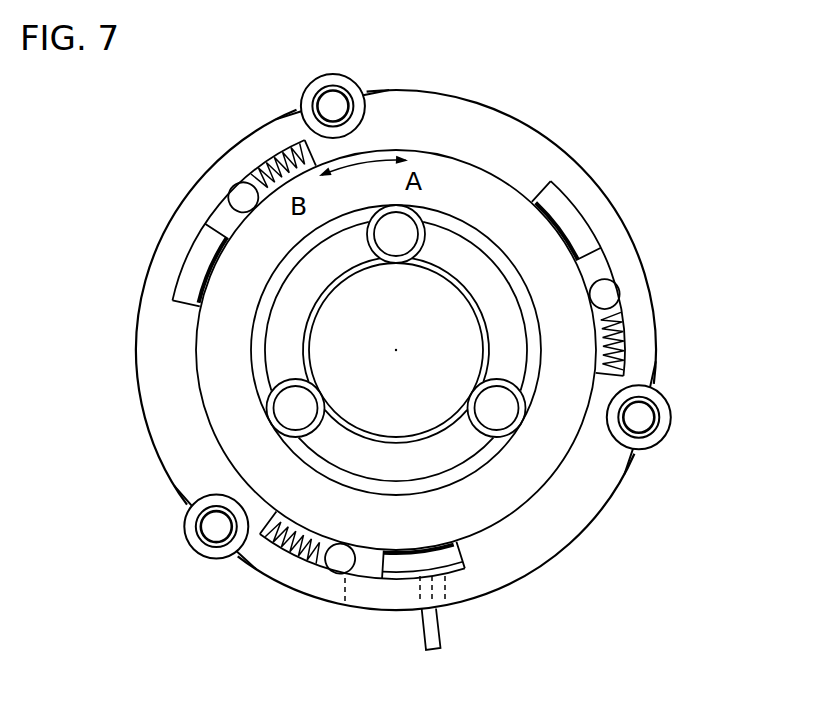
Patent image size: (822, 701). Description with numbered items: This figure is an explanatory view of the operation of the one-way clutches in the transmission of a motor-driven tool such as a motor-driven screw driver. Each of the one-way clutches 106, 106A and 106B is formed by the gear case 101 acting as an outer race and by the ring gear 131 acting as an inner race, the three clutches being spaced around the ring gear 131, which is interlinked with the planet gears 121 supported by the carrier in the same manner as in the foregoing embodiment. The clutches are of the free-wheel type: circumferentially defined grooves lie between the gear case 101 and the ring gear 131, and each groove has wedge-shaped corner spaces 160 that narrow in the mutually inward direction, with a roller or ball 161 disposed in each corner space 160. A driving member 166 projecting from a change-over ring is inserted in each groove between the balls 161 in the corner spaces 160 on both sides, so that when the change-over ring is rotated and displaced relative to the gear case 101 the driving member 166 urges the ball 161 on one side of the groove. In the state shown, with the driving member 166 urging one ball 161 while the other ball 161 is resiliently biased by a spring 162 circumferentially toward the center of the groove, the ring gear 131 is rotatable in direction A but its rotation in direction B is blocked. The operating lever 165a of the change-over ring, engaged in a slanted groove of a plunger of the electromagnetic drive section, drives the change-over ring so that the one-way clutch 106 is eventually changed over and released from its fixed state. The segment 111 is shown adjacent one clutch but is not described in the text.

The gear case 101 is at (475, 123).
The brake shoe plate 111 is at (567, 182).
The planet gear 121 is at (417, 227).
The ring gear 131 is at (539, 345).
The one-way clutch 106 is at (215, 187).
The one-way clutch 106A is at (327, 575).
The one-way clutch 106B is at (634, 265).
The wedge-shaped corner space 160 is at (225, 222).
The roller or ball 161 is at (240, 196).
The spring 162 is at (257, 181).
The driving member 166 is at (202, 270).
The operating lever 165a is at (438, 636).